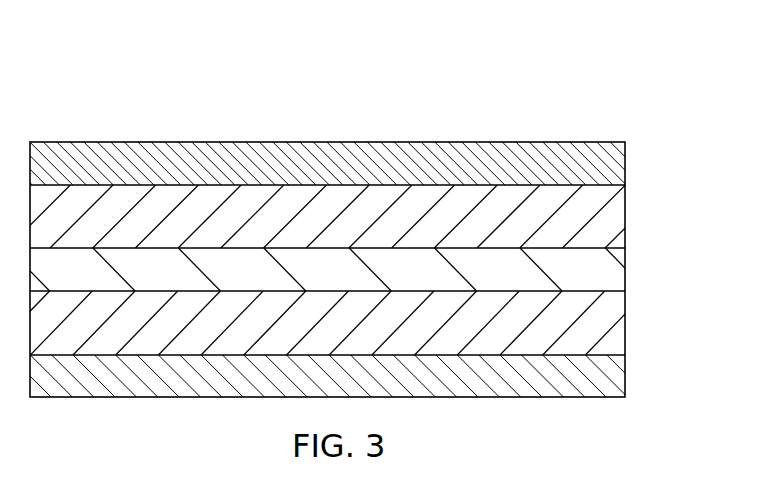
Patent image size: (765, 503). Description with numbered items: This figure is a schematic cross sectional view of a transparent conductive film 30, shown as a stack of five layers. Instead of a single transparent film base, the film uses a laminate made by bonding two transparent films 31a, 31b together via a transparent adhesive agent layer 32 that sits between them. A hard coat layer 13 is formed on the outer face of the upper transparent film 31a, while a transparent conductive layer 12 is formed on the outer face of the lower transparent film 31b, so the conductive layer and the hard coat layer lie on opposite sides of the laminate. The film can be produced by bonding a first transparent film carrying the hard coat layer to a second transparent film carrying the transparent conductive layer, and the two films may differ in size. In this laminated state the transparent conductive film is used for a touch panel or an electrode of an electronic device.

The transparent conductive film 30 is at (580, 94).
The hard coat layer 13 is at (610, 170).
The transparent film 31a is at (610, 223).
The transparent adhesive agent layer 32 is at (610, 273).
The transparent film 31b is at (610, 334).
The transparent conductive layer 12 is at (610, 385).